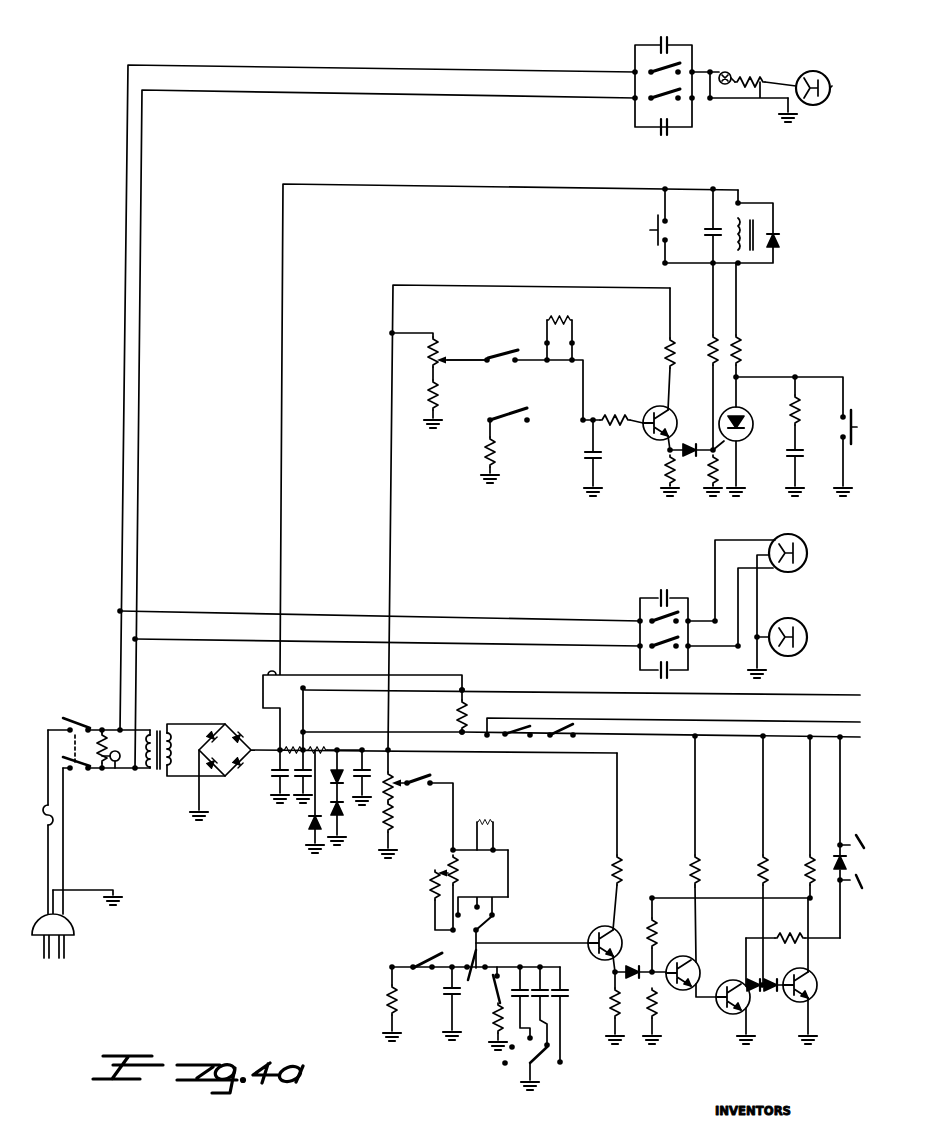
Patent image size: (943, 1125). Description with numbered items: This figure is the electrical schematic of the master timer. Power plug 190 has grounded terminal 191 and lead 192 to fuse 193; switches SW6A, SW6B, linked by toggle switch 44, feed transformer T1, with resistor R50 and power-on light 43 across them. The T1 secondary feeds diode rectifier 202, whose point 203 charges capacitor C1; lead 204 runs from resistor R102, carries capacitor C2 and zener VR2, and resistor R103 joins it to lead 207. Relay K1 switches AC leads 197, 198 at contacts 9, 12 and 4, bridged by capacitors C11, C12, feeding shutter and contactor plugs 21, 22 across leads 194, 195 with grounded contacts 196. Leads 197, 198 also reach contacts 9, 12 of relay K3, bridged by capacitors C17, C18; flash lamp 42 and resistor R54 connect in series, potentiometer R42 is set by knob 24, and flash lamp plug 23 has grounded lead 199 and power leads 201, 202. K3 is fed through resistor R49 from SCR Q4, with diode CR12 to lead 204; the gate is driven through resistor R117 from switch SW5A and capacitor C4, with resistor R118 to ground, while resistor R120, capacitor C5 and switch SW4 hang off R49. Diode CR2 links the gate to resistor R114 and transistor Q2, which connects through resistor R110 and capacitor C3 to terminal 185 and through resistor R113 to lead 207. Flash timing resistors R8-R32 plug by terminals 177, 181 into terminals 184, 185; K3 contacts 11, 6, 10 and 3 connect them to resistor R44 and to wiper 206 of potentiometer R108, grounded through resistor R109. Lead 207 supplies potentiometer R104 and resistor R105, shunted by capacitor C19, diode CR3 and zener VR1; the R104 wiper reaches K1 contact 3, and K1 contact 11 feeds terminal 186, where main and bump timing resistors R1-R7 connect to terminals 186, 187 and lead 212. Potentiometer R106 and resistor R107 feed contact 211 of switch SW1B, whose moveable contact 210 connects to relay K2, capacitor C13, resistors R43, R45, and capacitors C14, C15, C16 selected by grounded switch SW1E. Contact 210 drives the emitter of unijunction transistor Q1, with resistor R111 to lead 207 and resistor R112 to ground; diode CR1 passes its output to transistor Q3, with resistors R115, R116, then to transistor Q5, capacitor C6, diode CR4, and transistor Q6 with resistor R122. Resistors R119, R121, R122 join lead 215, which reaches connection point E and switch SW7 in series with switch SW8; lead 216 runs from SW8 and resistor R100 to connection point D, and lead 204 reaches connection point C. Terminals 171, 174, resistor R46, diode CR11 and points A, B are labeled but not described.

The capacitor C17 is at (668, 44).
The capacitor C18 is at (664, 130).
The relay K3 is at (640, 86).
The relay contact 9 is at (647, 339).
The relay contact 4 is at (597, 525).
The relay contact 12 is at (560, 558).
The resistor R54 is at (710, 101).
The flash lamp 42 is at (724, 71).
The flash intensity potentiometer R42 is at (748, 78).
The knob 24 is at (790, 79).
The power lead 201 is at (813, 71).
The flash lamp plug 23 is at (838, 89).
The power lead 202 is at (760, 102).
The grounded lead 199 is at (801, 108).
The AC power lead 197 is at (118, 600).
The AC power lead 198 is at (137, 578).
The lead 207 is at (388, 527).
The lead 204 is at (282, 668).
The switch SW5A is at (651, 231).
The capacitor C4 is at (707, 233).
The diode CR12 is at (781, 238).
The resistor R117 is at (709, 338).
The resistor R118 is at (708, 472).
The resistor R49 is at (741, 347).
The SCR Q4 is at (751, 416).
The resistor R120 is at (791, 396).
The capacitor C5 is at (789, 462).
The switch SW4 is at (856, 409).
The resistor R113 is at (666, 346).
The transistor Q2 is at (657, 406).
The resistor R110 is at (620, 416).
The capacitor C3 is at (588, 458).
The resistor R114 is at (665, 456).
The diode CR2 is at (688, 447).
The potentiometer R108 is at (430, 352).
The resistor R109 is at (430, 386).
The wiper contact 206 is at (450, 358).
The relay contact 3 is at (445, 583).
The relay contact 11 is at (478, 584).
The relay contact 10 is at (444, 692).
The relay contact 6 is at (528, 424).
The resistor R44 is at (488, 449).
The terminal 177 is at (542, 337).
The terminal 181 is at (575, 338).
The flash timing resistors R8-R32 is at (567, 305).
The terminal 184 is at (547, 366).
The terminal 185 is at (572, 366).
The relay K1 is at (642, 636).
The capacitor C11 is at (659, 596).
The capacitor C12 is at (664, 674).
The lead 194 is at (707, 618).
The lead 195 is at (726, 649).
The shutter plug 21 is at (852, 543).
The contactor plug 22 is at (850, 625).
The grounded contacts 196 is at (762, 602).
The connection point C is at (866, 690).
The connection point D is at (866, 718).
The connection point E is at (866, 735).
The lead 216 is at (678, 721).
The lead 215 is at (666, 739).
The switch SW8 is at (508, 737).
The switch SW7 is at (578, 724).
The power switch SW6A is at (90, 731).
The toggle on-off switch 44 is at (82, 714).
The resistor R50 is at (106, 740).
The power-on light 43 is at (116, 763).
The power switch SW6B is at (106, 778).
The transformer T1 is at (163, 773).
The rectifier output point 203 is at (241, 734).
The power plug 190 is at (76, 932).
The fuse 193 is at (58, 817).
The lead 192 is at (49, 862).
The grounded terminal 191 is at (93, 890).
The capacitor C1 is at (277, 788).
The capacitor C2 is at (300, 788).
The resistor R102 is at (292, 746).
The resistor R103 is at (313, 746).
The resistor R100 is at (460, 713).
The zener diode VR2 is at (312, 826).
The diode CR3 is at (337, 768).
The zener diode VR1 is at (339, 830).
The capacitor C19 is at (368, 770).
The potentiometer R104 is at (393, 783).
The resistor R105 is at (386, 826).
The terminal 171 is at (483, 817).
The main and bump timing resistors R1-R7 is at (494, 822).
The terminal 174 is at (498, 847).
The terminal 187 is at (498, 853).
The terminal 186 is at (451, 851).
The potentiometer R106 is at (449, 880).
The lead 212 is at (509, 867).
The resistor R107 is at (432, 896).
The contact 211 is at (449, 931).
The switch SW1B is at (484, 934).
The moveable contact 210 is at (486, 927).
The relay K2 is at (495, 973).
The resistor R45 is at (495, 1020).
The capacitor C13 is at (448, 994).
The resistor R43 is at (388, 990).
The capacitor C14 is at (520, 985).
The capacitor C15 is at (541, 985).
The capacitor C16 is at (562, 986).
The switch SW1E is at (545, 1079).
The resistor R111 is at (620, 861).
The unijunction transistor Q1 is at (603, 927).
The diode CR1 is at (621, 968).
The resistor R112 is at (612, 1000).
The resistor R115 is at (656, 941).
The resistor R116 is at (660, 1010).
The transistor Q3 is at (695, 960).
The resistor R119 is at (692, 862).
The transistor Q5 is at (730, 1014).
The resistor R46 is at (798, 924).
The capacitor C6 is at (752, 982).
The diode CR4 is at (773, 980).
The resistor R121 is at (759, 866).
The transistor Q6 is at (812, 981).
The resistor R122 is at (808, 858).
The terminal A is at (850, 792).
The diode CR11 is at (828, 872).
The terminal B is at (849, 906).